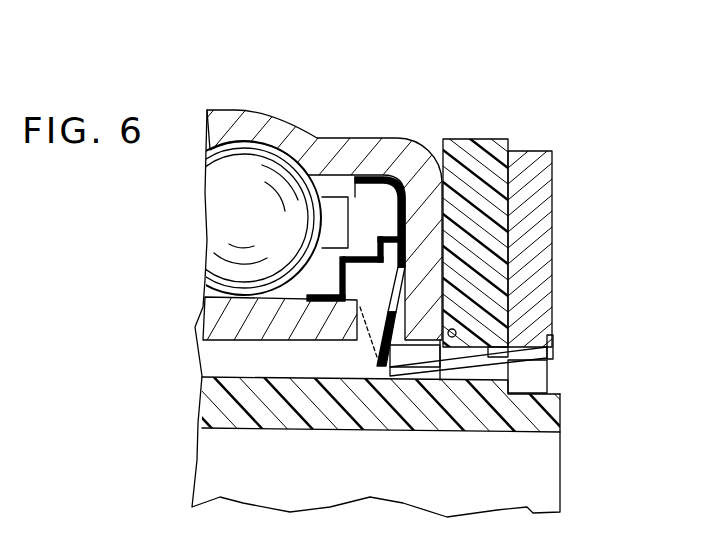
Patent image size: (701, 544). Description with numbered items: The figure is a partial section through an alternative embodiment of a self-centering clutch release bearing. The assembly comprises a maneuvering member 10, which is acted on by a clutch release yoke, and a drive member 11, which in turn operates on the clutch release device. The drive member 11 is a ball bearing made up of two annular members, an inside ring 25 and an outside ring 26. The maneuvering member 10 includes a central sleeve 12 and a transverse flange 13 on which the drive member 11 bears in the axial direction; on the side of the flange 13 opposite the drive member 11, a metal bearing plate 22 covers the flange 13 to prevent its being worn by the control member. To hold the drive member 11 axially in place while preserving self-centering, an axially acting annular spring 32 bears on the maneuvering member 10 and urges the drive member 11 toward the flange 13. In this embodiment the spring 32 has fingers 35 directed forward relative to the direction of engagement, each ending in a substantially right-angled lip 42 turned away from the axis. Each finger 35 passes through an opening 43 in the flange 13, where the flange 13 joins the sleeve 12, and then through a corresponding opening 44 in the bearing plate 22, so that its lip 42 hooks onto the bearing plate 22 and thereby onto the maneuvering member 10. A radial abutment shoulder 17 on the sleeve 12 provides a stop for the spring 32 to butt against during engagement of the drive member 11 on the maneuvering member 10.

The maneuvering member 10 is at (562, 196).
The drive member 11 is at (345, 122).
The central sleeve 12 is at (204, 430).
The transverse flange 13 is at (467, 147).
The radial abutment shoulder 17 is at (377, 368).
The bearing plate 22 is at (530, 165).
The inside ring 25 is at (222, 322).
The outside ring 26 is at (258, 122).
The annular spring 32 is at (372, 313).
The fingers 35 is at (465, 368).
The lip 42 is at (556, 346).
The opening 43 is at (450, 330).
The opening 44 is at (525, 350).